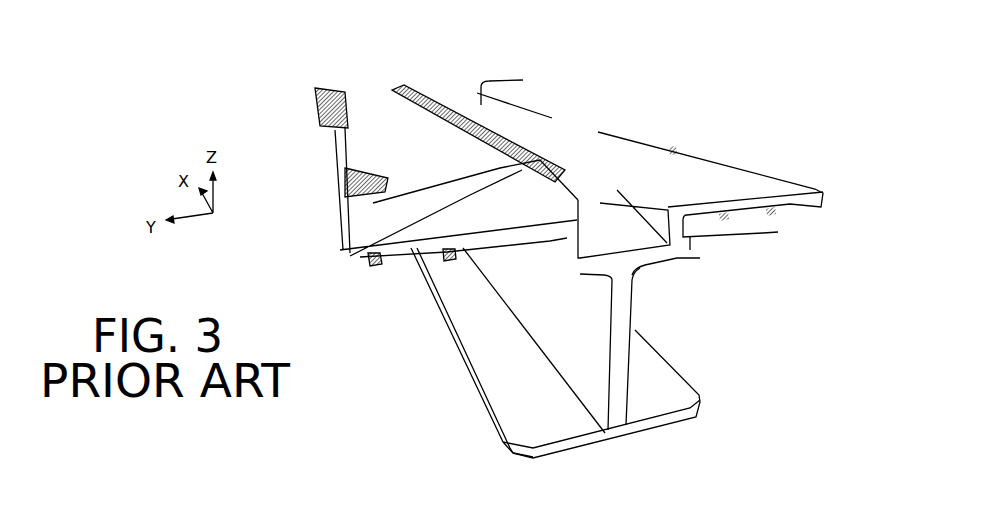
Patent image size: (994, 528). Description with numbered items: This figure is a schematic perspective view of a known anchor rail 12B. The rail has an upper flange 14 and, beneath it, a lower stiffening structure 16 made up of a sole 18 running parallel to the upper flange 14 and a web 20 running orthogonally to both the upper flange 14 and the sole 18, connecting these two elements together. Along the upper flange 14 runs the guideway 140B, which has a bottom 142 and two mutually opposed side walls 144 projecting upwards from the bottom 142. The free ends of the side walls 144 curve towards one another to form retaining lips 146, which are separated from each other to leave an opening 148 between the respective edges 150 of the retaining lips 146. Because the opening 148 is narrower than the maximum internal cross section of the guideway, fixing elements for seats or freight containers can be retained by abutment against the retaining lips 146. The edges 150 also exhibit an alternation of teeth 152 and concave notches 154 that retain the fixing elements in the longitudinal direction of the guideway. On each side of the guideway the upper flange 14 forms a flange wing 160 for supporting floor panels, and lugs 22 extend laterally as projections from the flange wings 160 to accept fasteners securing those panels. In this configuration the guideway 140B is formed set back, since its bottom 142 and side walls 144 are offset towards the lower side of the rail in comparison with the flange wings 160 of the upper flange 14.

The anchor rail 12B is at (686, 67).
The upper flange 14 is at (812, 187).
The lower stiffening structure 16 is at (447, 500).
The sole 18 is at (515, 418).
The web 20 is at (567, 322).
The lugs 22 is at (330, 157).
The guideway 140B is at (686, 262).
The bottom 142 is at (607, 237).
The side walls 144 is at (755, 234).
The retaining lips 146 is at (447, 97).
The opening 148 is at (545, 195).
The edges 150 is at (420, 92).
The teeth 152 is at (371, 260).
The concave notches 154 is at (367, 203).
The flange wings 160 is at (790, 205).